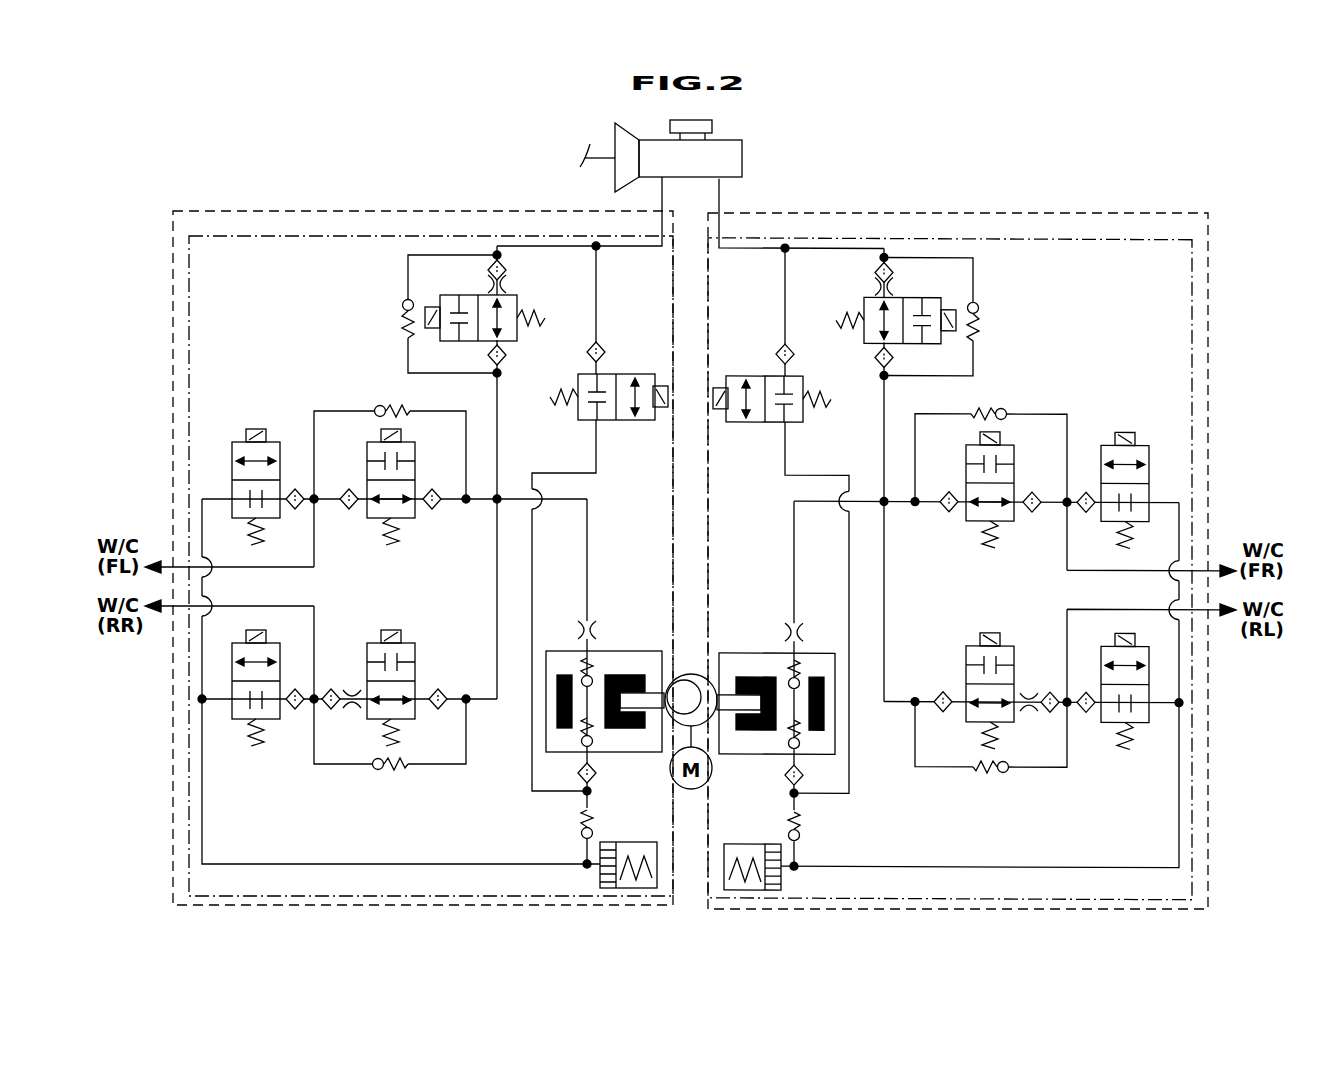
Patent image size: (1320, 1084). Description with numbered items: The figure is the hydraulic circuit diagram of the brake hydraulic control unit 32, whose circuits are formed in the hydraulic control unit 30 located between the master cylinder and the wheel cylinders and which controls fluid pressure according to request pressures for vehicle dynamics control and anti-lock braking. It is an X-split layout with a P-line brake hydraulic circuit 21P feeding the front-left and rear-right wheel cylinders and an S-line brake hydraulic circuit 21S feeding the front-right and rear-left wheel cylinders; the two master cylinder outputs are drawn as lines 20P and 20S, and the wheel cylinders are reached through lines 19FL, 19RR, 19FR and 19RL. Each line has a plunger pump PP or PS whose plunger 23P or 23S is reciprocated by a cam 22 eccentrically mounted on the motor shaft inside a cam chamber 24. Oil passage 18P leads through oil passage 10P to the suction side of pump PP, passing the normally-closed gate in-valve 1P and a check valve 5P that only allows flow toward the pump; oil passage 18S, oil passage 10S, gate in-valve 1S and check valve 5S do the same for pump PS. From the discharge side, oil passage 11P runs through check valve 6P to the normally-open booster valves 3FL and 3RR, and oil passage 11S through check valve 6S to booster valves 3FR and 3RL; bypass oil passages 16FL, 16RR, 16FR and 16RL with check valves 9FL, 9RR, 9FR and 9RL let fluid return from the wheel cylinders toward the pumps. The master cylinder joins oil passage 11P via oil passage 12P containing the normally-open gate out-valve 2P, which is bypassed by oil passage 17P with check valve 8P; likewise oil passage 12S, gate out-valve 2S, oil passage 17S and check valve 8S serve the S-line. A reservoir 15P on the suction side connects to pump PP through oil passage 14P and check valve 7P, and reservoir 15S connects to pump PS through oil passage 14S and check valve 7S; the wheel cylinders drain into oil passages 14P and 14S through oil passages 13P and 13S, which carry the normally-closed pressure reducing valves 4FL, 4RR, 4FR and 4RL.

The gate in-valve 1P is at (604, 374).
The gate in-valve 1S is at (772, 335).
The gate out-valve 2P is at (508, 292).
The gate out-valve 2S is at (878, 303).
The booster valve 3FL is at (367, 458).
The booster valve 3FR is at (1012, 482).
The booster valve 3RR is at (378, 631).
The booster valve 3RL is at (1008, 668).
The pressure reducing valve 4FL is at (240, 442).
The pressure reducing valve 4FR is at (1141, 467).
The pressure reducing valve 4RR is at (238, 720).
The pressure reducing valve 4RL is at (1133, 713).
The check valve 5P is at (582, 746).
The check valve 5S is at (814, 765).
The check valve 6P is at (582, 665).
The check valve 6S is at (816, 669).
The check valve 7P is at (580, 832).
The check valve 7S is at (830, 819).
The check valve 8P is at (402, 305).
The check valve 8S is at (1005, 315).
The check valve 9FL is at (378, 405).
The check valve 9FR is at (1001, 383).
The check valve 9RR is at (377, 771).
The check valve 9RL is at (1007, 797).
The oil passage 10P is at (598, 457).
The oil passage 10S is at (781, 610).
The oil passage 11P is at (590, 521).
The oil passage 11S is at (757, 577).
The oil passage 12P is at (499, 442).
The oil passage 12S is at (846, 538).
The oil passage 13P is at (340, 864).
The oil passage 13S is at (980, 800).
The oil passage 14P is at (583, 850).
The oil passage 14S is at (836, 849).
The reservoir 15P is at (600, 877).
The reservoir 15S is at (797, 871).
The oil passage 16FL is at (320, 411).
The oil passage 16FR is at (1008, 429).
The oil passage 16RR is at (440, 766).
The oil passage 16RL is at (986, 765).
The oil passage 17P is at (407, 270).
The oil passage 17S is at (967, 316).
The oil passage 18P is at (512, 246).
The oil passage 18S is at (907, 269).
The wheel cylinder line FL 19FL is at (190, 567).
The wheel cylinder line FR 19FR is at (1185, 545).
The wheel cylinder line RR 19RR is at (190, 606).
The wheel cylinder line RL 19RL is at (1187, 651).
The master cylinder line (primary) 20P is at (658, 244).
The master cylinder line (secondary) 20S is at (801, 216).
The brake hydraulic circuit 21P is at (350, 211).
The brake hydraulic circuit 21S is at (950, 530).
The cam 22 is at (685, 688).
The plunger 23P is at (655, 706).
The plunger 23S is at (745, 751).
The cam chamber 24 is at (698, 678).
The hydraulic control unit 30 is at (955, 521).
The brake hydraulic control unit 32 is at (1228, 208).
The plunger pump PP is at (631, 651).
The plunger pump PS is at (777, 679).